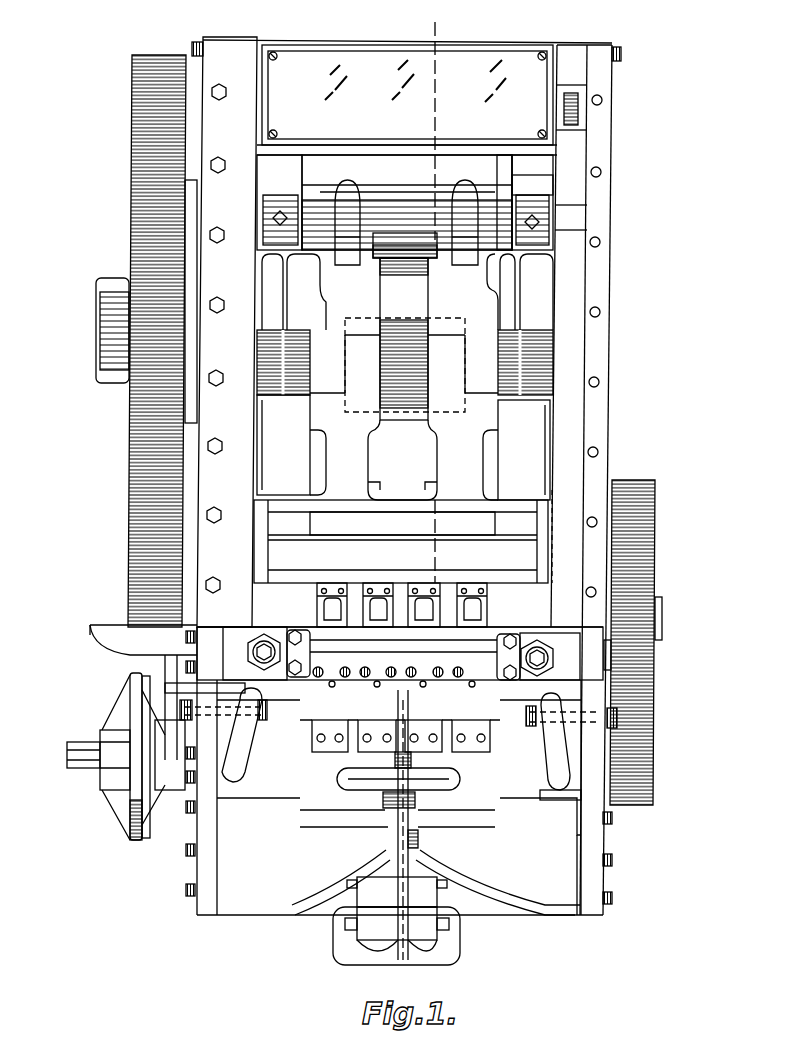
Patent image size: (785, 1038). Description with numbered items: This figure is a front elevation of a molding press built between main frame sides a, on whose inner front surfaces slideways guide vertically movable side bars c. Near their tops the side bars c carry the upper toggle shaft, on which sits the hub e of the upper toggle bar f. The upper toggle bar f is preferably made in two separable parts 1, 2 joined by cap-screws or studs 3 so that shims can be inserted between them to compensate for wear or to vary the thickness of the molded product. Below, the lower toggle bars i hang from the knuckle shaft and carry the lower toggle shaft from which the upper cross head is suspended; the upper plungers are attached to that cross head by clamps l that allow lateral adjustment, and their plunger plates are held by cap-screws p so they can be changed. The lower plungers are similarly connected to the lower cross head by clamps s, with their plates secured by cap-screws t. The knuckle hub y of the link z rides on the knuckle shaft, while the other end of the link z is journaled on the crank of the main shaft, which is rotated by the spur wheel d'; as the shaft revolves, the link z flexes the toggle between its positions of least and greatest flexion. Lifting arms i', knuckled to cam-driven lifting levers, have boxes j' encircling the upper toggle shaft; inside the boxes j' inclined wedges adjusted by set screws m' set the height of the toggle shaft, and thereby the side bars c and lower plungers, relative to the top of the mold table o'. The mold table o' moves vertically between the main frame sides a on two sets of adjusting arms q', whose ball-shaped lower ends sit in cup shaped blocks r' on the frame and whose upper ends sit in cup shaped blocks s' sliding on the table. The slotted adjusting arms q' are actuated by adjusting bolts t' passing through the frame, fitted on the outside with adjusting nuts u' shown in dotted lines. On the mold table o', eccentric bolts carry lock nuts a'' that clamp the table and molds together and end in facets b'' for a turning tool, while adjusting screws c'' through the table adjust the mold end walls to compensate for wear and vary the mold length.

The main frame sides a is at (531, 497).
The side bars c is at (612, 480).
The spur wheel d' is at (143, 341).
The hub of the upper toggle bar e is at (407, 202).
The cap-screws or studs 3 is at (480, 268).
The set screws m' is at (597, 237).
The boxes of the lifting arms j' is at (583, 200).
The separable part of the upper toggle bar 2 is at (500, 171).
The lifting arms i' is at (186, 281).
The upper toggle bar f is at (325, 298).
The lower toggle bars i is at (212, 445).
The separable part of the upper toggle bar 1 is at (473, 297).
The link z is at (375, 277).
The knuckle hub y is at (420, 383).
The clamps l is at (425, 588).
The cap-screws p is at (322, 615).
The mold table o' is at (578, 602).
The lock nuts a'' is at (170, 648).
The facets b'' is at (599, 656).
The adjusting screws c'' is at (402, 752).
The cap-screws t is at (367, 776).
The clamps s is at (400, 786).
The adjusting bolts t' is at (126, 754).
The cup shaped blocks s' is at (164, 688).
The adjusting nuts u' is at (166, 718).
The adjusting arms q' is at (414, 780).
The cup shaped blocks r' is at (597, 838).